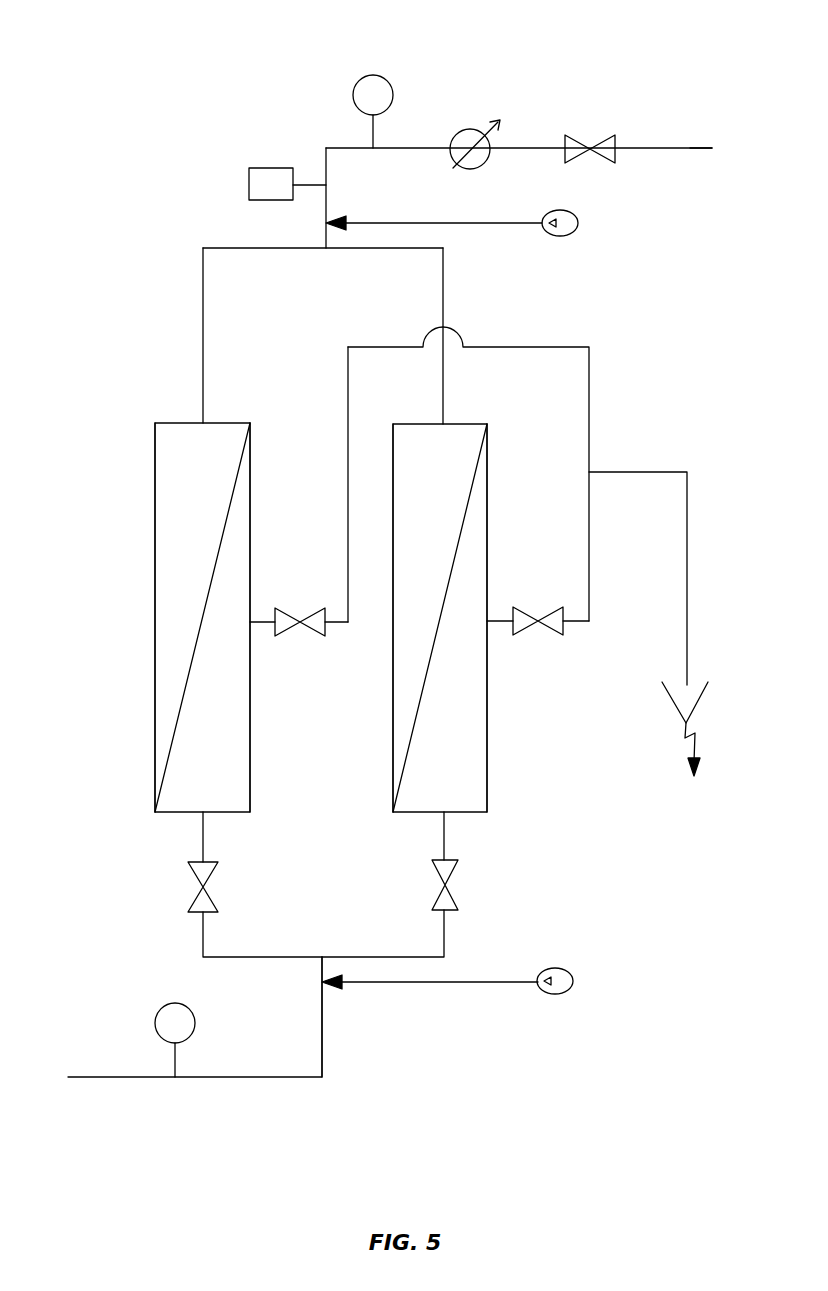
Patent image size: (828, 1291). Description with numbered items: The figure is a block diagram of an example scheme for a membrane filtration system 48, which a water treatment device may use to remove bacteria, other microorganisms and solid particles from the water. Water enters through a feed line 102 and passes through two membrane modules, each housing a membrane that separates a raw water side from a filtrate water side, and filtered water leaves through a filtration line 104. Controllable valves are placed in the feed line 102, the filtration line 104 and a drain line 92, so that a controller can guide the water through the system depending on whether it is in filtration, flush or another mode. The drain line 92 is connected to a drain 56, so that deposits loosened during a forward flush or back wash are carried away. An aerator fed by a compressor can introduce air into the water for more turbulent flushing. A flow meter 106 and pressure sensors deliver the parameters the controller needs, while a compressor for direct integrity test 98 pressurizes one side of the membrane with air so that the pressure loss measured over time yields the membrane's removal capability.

The membrane filtration system 48 is at (110, 146).
The drain 56 is at (704, 696).
The drain line 92 is at (688, 508).
The compressor for direct integrity test 98 is at (268, 168).
The feed line 102 is at (322, 1040).
The filtration line 104 is at (688, 148).
The flow meter 106 is at (465, 132).